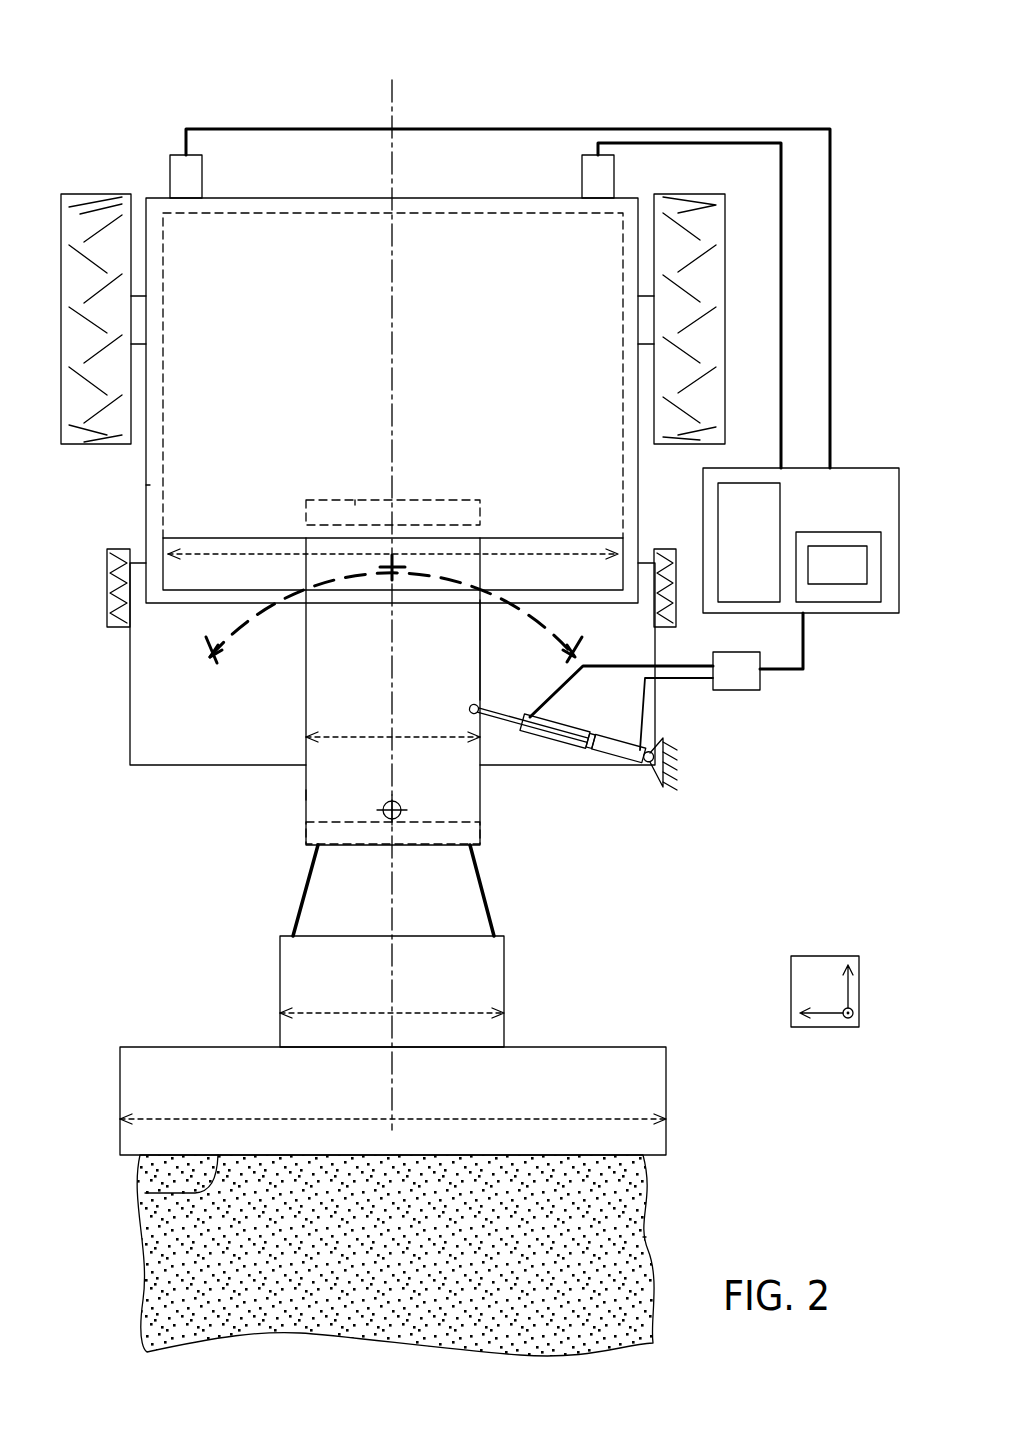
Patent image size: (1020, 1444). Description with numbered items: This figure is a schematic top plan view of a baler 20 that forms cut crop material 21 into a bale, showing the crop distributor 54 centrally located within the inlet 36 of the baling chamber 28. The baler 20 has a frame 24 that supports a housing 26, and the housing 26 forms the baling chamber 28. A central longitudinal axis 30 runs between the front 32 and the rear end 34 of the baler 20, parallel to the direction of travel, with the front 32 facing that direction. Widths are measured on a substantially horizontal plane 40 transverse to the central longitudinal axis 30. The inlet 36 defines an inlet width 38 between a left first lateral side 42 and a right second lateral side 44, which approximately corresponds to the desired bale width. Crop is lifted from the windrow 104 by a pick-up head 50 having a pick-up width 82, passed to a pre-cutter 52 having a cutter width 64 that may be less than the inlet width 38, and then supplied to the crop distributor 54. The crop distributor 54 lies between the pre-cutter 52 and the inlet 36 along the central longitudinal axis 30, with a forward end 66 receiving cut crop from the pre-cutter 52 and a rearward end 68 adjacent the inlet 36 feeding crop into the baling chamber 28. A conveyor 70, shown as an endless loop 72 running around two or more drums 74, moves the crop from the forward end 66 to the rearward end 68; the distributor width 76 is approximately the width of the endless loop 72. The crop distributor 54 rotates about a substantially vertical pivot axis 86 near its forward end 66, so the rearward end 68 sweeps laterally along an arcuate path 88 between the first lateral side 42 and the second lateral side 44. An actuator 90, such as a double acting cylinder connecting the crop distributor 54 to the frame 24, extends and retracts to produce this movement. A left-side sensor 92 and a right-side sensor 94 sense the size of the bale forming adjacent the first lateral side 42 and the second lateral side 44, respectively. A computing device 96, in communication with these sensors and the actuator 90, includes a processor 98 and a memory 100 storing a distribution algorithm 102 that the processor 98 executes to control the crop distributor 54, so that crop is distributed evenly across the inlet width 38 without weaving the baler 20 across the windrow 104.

The baler 20 is at (652, 58).
The cut crop material 21 is at (307, 1248).
The frame 24 is at (125, 655).
The housing 26 is at (146, 485).
The baling chamber 28 is at (352, 321).
The central longitudinal axis 30 is at (392, 96).
The front 32 is at (145, 1193).
The rear end 34 is at (348, 197).
The inlet 36 is at (188, 585).
The inlet width 38 is at (525, 553).
The horizontal plane 40 is at (820, 975).
The first lateral side 42 is at (638, 412).
The second lateral side 44 is at (146, 322).
The pick-up head 50 is at (593, 1065).
The pre-cutter 52 is at (468, 968).
The crop distributor 54 is at (297, 790).
The cutter width 64 is at (335, 1013).
The forward end 66 is at (352, 848).
The rearward end 68 is at (360, 500).
The conveyor 70 is at (306, 662).
The endless loop 72 is at (481, 657).
The drums 74 is at (430, 518).
The distributor width 76 is at (352, 737).
The pick-up width 82 is at (473, 1120).
The pivot axis 86 is at (401, 806).
The arcuate path 88 is at (300, 582).
The actuator 90 is at (578, 755).
The left-side sensor 92 is at (593, 178).
The right-side sensor 94 is at (205, 175).
The computing device 96 is at (857, 468).
The processor 98 is at (764, 554).
The memory 100 is at (826, 532).
The distribution algorithm 102 is at (858, 580).
The windrow 104 is at (645, 1237).